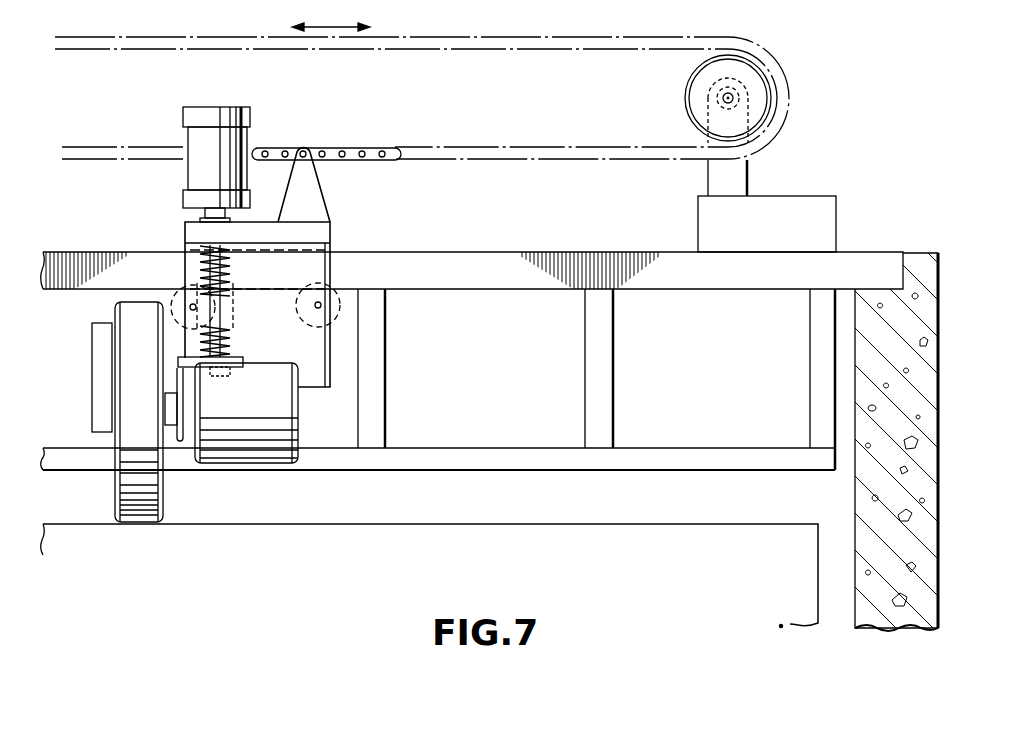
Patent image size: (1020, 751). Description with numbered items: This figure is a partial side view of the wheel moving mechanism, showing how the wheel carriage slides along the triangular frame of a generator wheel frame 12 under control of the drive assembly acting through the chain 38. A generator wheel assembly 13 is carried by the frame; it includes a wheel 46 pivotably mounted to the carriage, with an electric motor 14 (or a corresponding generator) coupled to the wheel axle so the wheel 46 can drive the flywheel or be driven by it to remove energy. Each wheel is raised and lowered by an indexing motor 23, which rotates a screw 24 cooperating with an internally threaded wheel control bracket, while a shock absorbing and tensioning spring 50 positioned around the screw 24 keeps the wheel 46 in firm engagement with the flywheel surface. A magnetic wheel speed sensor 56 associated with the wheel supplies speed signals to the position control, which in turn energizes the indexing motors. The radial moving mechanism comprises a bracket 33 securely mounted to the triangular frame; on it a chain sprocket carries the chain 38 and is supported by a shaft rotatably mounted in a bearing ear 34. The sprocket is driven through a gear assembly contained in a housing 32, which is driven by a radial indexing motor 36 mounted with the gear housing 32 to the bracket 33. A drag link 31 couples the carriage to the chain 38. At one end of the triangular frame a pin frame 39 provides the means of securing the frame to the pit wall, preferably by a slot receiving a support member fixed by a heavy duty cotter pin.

The generator wheel frame 12 is at (492, 248).
The generator wheel assembly 13 is at (342, 240).
The electric motor 14 is at (262, 411).
The indexing motor 23 is at (248, 107).
The screw 24 is at (218, 283).
The link 31 is at (315, 188).
The gear housing 32 is at (686, 81).
The bracket 33 is at (782, 235).
The bearing ear 34 is at (738, 174).
The indexing motor 36 is at (760, 90).
The chain 38 is at (570, 38).
The pin frame 39 is at (874, 258).
The wheel 46 is at (118, 493).
The shock absorbing and tensioning spring 50 is at (233, 336).
The magnetic wheel speed sensor 56 is at (92, 334).